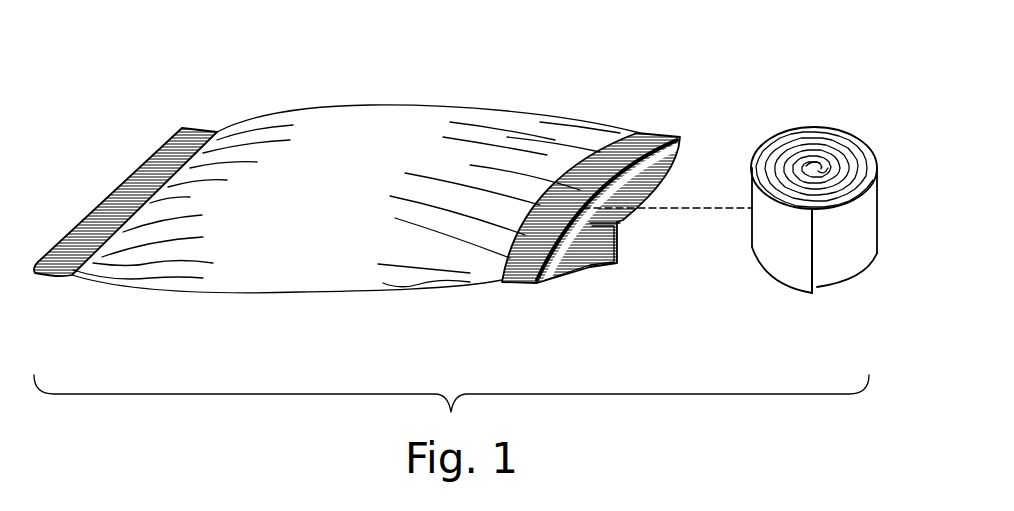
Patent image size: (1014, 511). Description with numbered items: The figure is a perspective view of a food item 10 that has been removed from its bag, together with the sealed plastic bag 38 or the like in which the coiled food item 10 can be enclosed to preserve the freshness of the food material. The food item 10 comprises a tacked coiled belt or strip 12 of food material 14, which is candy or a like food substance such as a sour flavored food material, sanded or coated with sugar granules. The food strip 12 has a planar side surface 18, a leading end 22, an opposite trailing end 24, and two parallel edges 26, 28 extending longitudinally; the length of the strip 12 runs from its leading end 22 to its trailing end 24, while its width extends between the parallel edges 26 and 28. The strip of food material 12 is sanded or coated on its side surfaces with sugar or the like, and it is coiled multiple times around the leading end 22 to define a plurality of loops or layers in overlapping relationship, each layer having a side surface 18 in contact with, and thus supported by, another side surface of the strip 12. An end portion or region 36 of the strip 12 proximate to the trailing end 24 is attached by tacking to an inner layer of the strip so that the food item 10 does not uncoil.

The food item 10 is at (814, 192).
The coiled strip of food material 12 is at (752, 247).
The food material 14 is at (805, 133).
The planar side surface 18 is at (876, 180).
The leading end 22 is at (833, 167).
The trailing end 24 is at (820, 277).
The parallel edge 26 is at (773, 280).
The parallel edge 28 is at (773, 140).
The end portion 36 is at (800, 267).
The sealed plastic bag 38 is at (365, 118).